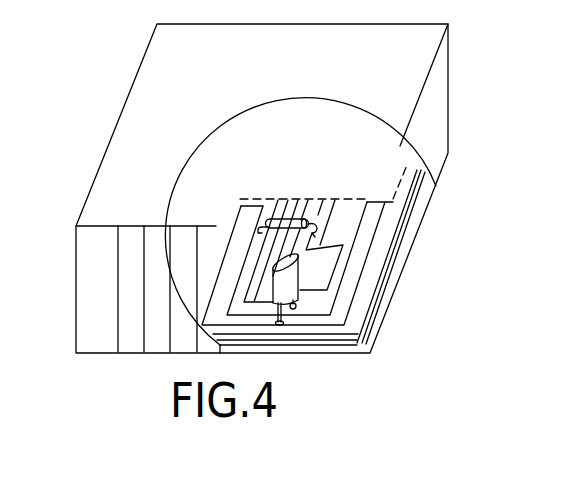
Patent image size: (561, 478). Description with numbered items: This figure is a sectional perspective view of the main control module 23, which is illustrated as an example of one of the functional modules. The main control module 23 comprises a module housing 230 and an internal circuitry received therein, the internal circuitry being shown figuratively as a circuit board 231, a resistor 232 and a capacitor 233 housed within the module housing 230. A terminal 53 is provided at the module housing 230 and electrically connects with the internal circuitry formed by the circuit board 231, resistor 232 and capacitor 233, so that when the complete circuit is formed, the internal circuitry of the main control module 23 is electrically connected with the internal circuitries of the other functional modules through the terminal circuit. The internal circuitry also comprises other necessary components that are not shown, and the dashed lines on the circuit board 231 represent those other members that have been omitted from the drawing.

The main control module 23 is at (173, 72).
The terminal 53 is at (130, 282).
The module housing 230 is at (452, 85).
The circuit board 231 is at (392, 224).
The resistor 232 is at (293, 228).
The capacitor 233 is at (288, 283).